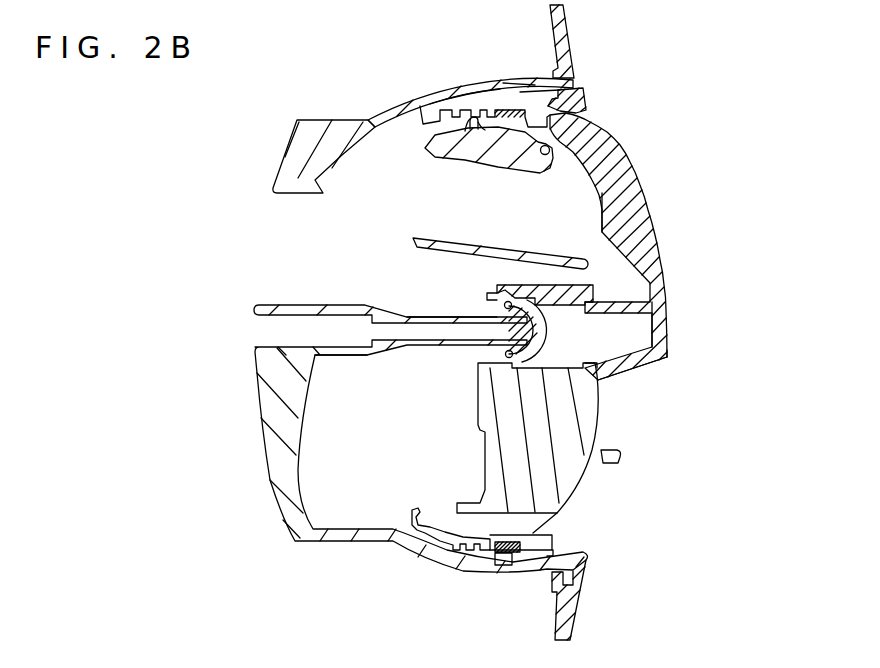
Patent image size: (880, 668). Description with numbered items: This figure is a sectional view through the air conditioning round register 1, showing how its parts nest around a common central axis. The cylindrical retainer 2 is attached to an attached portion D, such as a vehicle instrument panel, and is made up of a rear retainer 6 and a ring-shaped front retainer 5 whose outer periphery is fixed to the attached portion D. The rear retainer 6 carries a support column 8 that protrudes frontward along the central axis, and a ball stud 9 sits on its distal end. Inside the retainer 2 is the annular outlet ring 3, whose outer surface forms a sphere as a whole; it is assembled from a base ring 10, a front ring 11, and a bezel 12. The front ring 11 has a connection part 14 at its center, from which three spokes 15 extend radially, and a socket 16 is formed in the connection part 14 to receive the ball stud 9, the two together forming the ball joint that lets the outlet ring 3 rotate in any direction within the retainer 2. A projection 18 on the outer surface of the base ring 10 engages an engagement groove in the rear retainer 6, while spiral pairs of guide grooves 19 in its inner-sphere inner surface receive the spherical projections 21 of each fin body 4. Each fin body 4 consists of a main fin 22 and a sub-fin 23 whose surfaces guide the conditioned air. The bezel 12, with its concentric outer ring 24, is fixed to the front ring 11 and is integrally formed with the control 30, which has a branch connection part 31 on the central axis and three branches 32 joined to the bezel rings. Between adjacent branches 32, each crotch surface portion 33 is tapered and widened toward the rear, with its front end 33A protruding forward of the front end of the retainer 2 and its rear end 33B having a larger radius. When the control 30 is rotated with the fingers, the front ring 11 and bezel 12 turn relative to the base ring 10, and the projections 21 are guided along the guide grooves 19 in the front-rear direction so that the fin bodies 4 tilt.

The air conditioning round register 1 is at (682, 58).
The retainer 2 is at (540, 32).
The outlet ring 3 is at (528, 608).
The fin body 4 is at (553, 198).
The front retainer 5 is at (536, 82).
The rear retainer 6 is at (481, 82).
The support column 8 is at (416, 346).
The ball stud 9 is at (490, 345).
The base ring 10 is at (440, 537).
The front ring 11 is at (495, 550).
The bezel 12 is at (523, 552).
The connection part 14 is at (544, 334).
The spoke 15 is at (572, 472).
The socket 16 is at (497, 318).
The projection 18 is at (432, 110).
The guide groove 19 is at (457, 140).
The projection 21 is at (540, 156).
The main fin 22 is at (534, 253).
The sub-fin 23 is at (527, 173).
The outer ring 24 is at (560, 91).
The control 30 is at (735, 231).
The branch connection part 31 is at (665, 322).
The branch 32 is at (652, 212).
The crotch surface portion 33 is at (633, 370).
The front end of crotch surface portion 33A is at (668, 355).
The rear end of crotch surface portion 33B is at (598, 381).
The attached portion D is at (572, 33).